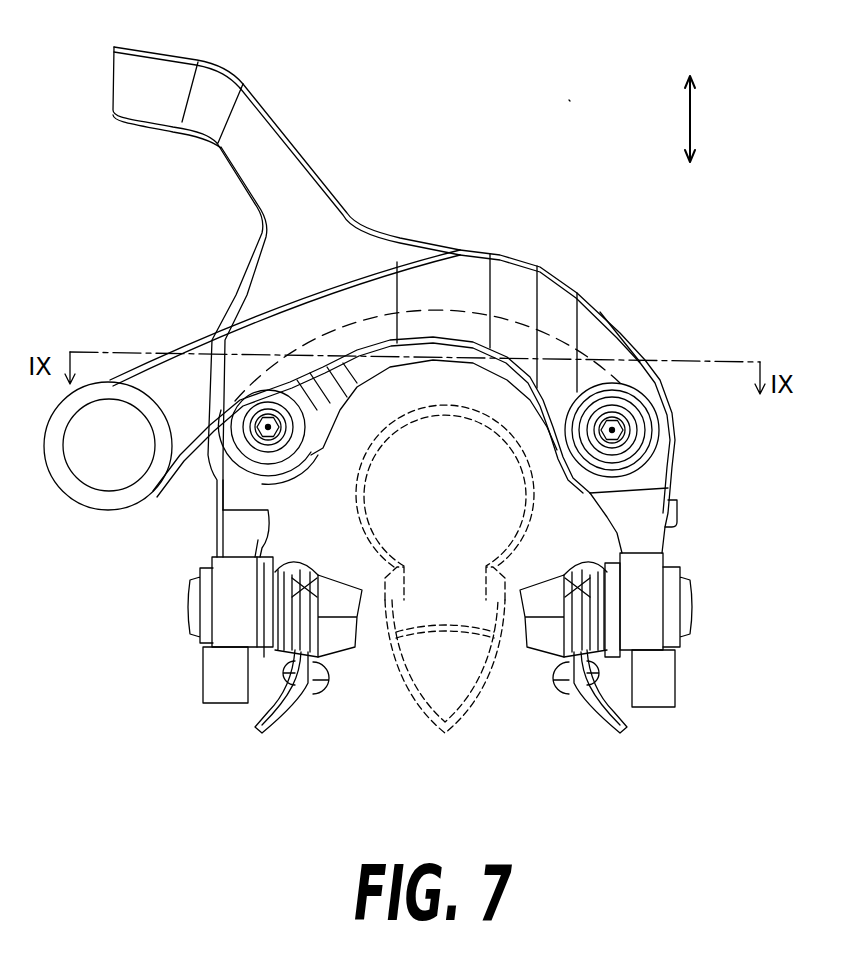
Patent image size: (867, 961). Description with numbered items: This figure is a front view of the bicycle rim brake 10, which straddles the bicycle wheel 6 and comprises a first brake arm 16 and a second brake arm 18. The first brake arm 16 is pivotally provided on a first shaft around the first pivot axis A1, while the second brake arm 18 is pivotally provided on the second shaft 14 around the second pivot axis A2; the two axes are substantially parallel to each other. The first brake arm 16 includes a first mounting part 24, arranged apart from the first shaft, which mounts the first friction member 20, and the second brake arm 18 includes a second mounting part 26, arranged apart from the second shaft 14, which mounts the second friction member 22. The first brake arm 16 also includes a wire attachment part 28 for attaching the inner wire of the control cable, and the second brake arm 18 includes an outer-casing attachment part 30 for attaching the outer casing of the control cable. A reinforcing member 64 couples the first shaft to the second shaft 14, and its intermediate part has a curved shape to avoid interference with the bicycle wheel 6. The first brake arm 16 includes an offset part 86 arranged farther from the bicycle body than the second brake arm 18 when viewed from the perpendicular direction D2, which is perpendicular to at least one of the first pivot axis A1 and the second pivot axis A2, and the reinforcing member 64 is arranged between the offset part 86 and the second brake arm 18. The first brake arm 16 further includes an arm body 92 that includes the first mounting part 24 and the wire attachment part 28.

The bicycle wheel 6 is at (478, 722).
The bicycle rim brake 10 is at (580, 98).
The second shaft 14 is at (260, 467).
The first brake arm 16 is at (609, 288).
The second brake arm 18 is at (363, 183).
The first friction member 20 is at (545, 666).
The second friction member 22 is at (353, 663).
The first mounting part 24 is at (655, 690).
The second mounting part 26 is at (228, 690).
The wire attachment part 28 is at (92, 497).
The outer-casing attachment part 30 is at (127, 82).
The reinforcing member 64 is at (505, 390).
The offset part 86 is at (460, 277).
The arm body 92 is at (640, 331).
The first pivot axis A1 is at (614, 430).
The second pivot axis A2 is at (266, 430).
The perpendicular direction D2 is at (690, 120).